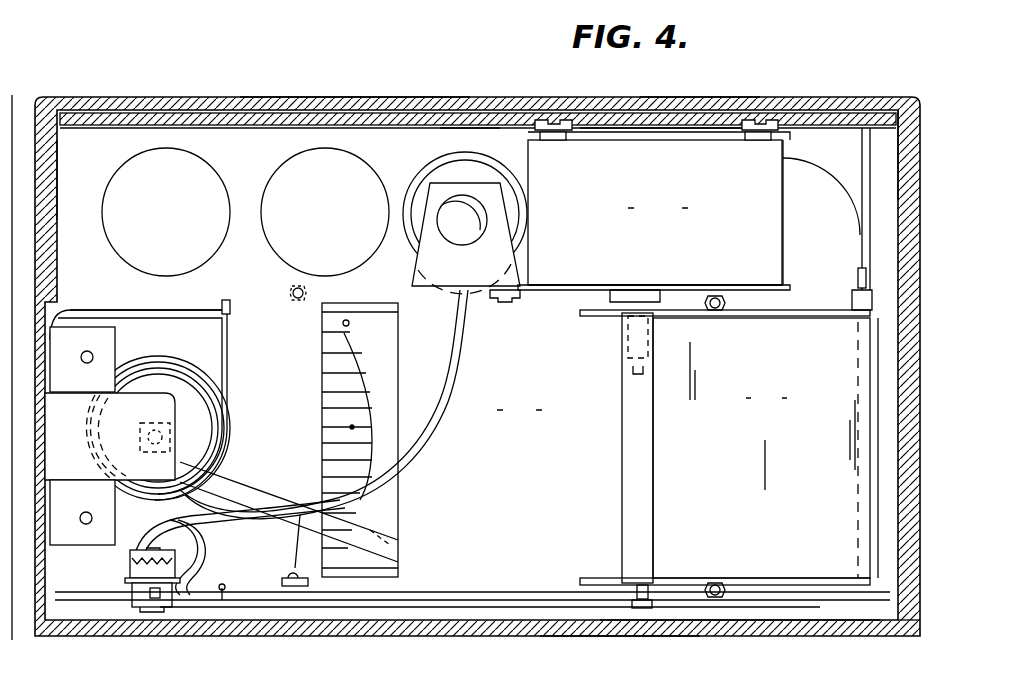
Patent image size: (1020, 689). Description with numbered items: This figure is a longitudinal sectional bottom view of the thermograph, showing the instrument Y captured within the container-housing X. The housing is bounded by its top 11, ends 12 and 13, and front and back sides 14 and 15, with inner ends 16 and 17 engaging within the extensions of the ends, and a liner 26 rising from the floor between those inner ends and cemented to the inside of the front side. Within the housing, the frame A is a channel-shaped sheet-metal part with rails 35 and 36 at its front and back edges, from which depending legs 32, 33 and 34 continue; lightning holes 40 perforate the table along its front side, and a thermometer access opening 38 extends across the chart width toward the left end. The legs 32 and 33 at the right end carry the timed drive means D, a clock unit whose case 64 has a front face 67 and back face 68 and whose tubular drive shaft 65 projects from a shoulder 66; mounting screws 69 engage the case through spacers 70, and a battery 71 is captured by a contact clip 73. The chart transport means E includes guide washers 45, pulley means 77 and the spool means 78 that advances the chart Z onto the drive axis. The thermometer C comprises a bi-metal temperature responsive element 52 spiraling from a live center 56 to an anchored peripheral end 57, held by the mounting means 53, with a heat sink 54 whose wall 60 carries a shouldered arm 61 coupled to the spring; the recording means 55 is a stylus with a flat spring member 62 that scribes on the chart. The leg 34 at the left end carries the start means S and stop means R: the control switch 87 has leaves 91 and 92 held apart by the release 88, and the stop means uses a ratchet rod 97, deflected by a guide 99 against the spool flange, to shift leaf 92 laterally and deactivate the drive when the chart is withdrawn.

The top 11 is at (300, 105).
The end 12 is at (45, 118).
The end 13 is at (906, 636).
The front side 14 is at (688, 100).
The back side 15 is at (605, 636).
The inner end 16 is at (60, 168).
The inner end 17 is at (892, 140).
The liner 26 is at (225, 118).
The leg 32 is at (603, 122).
The leg 33 is at (660, 620).
The leg 34 is at (136, 612).
The rail 35 is at (270, 130).
The rail 36 is at (746, 636).
The thermometer access opening 38 is at (400, 347).
The lightning holes 40 is at (300, 155).
The guide washers 45 is at (296, 300).
The temperature responsive element 52 is at (232, 374).
The mounting means 53 is at (138, 436).
The heat sink 54 is at (130, 301).
The recording means 55 is at (290, 462).
The live center 56 is at (128, 482).
The anchored peripheral end 57 is at (232, 306).
The wall 60 is at (45, 362).
The shouldered arm 61 is at (150, 312).
The flat spring member 62 is at (250, 468).
The case 64 is at (659, 208).
The drive shaft 65 is at (632, 358).
The shoulder 66 is at (622, 308).
The front face 67 is at (558, 294).
The back face 68 is at (700, 136).
The mounting screws 69 is at (548, 118).
The spacers 70 is at (553, 141).
The battery 71 is at (440, 163).
The contact clip 73 is at (460, 232).
The pulley means 77 is at (855, 302).
The spool means 78 is at (566, 520).
The control switch 87 is at (180, 600).
The release 88 is at (860, 222).
The leaf 91 is at (130, 568).
The leaf 92 is at (128, 583).
The ratchet rod 97 is at (460, 585).
The guide 99 is at (297, 550).
The container-housing X is at (437, 95).
The instrument Y is at (472, 124).
The timed drive means D is at (640, 148).
The thermometer C is at (200, 330).
The frame A is at (506, 440).
The chart Z is at (765, 448).
The start means S is at (192, 546).
The stop means R is at (512, 585).
The chart transport means E is at (590, 572).